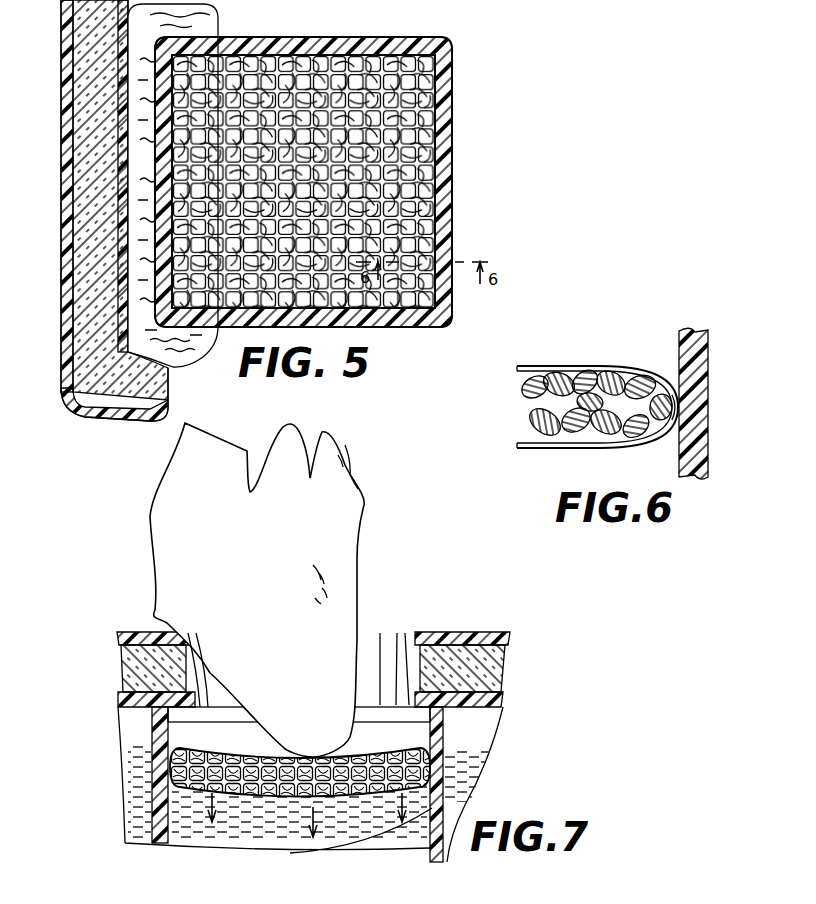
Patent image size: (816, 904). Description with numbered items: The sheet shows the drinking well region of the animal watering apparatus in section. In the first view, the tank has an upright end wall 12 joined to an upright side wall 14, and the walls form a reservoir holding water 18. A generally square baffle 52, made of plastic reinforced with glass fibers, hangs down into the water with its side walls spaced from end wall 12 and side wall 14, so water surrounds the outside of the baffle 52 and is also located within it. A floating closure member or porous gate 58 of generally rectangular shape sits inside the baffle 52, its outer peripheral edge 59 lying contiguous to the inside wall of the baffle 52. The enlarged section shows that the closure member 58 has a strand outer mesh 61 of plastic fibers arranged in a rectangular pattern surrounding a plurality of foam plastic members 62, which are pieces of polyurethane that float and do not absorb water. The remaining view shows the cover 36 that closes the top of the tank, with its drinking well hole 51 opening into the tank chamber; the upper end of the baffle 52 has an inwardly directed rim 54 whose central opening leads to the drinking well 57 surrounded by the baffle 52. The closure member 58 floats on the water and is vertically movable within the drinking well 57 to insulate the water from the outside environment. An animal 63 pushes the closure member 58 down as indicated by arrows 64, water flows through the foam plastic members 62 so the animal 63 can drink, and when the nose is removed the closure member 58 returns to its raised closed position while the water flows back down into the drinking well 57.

In FIG. 5, the end wall 12 is at (70, 134).
In FIG. 5, the side wall 14 is at (131, 422).
In FIG. 5, the water 18 is at (95, 203).
In FIG. 7, the cover 36 is at (476, 623).
In FIG. 7, the drinking well hole 51 is at (382, 660).
In FIG. 5, the baffle 52 is at (453, 152).
In FIG. 6, the baffle 52 is at (700, 386).
In FIG. 7, the baffle 52 is at (152, 779).
In FIG. 7, the rim 54 is at (133, 748).
In FIG. 7, the drinking well 57 is at (445, 755).
In FIG. 5, the closure member 58 is at (349, 159).
In FIG. 6, the closure member 58 is at (567, 392).
In FIG. 7, the closure member 58 is at (293, 796).
In FIG. 5, the outer peripheral edge 59 is at (452, 224).
In FIG. 6, the outer peripheral edge 59 is at (677, 401).
In FIG. 7, the outer peripheral edge 59 is at (434, 806).
In FIG. 5, the outer mesh 61 is at (403, 67).
In FIG. 6, the outer mesh 61 is at (546, 452).
In FIG. 5, the foam plastic members 62 is at (347, 67).
In FIG. 6, the foam plastic members 62 is at (521, 425).
In FIG. 7, the animal 63 is at (160, 533).
In FIG. 7, the arrows 64 is at (367, 810).